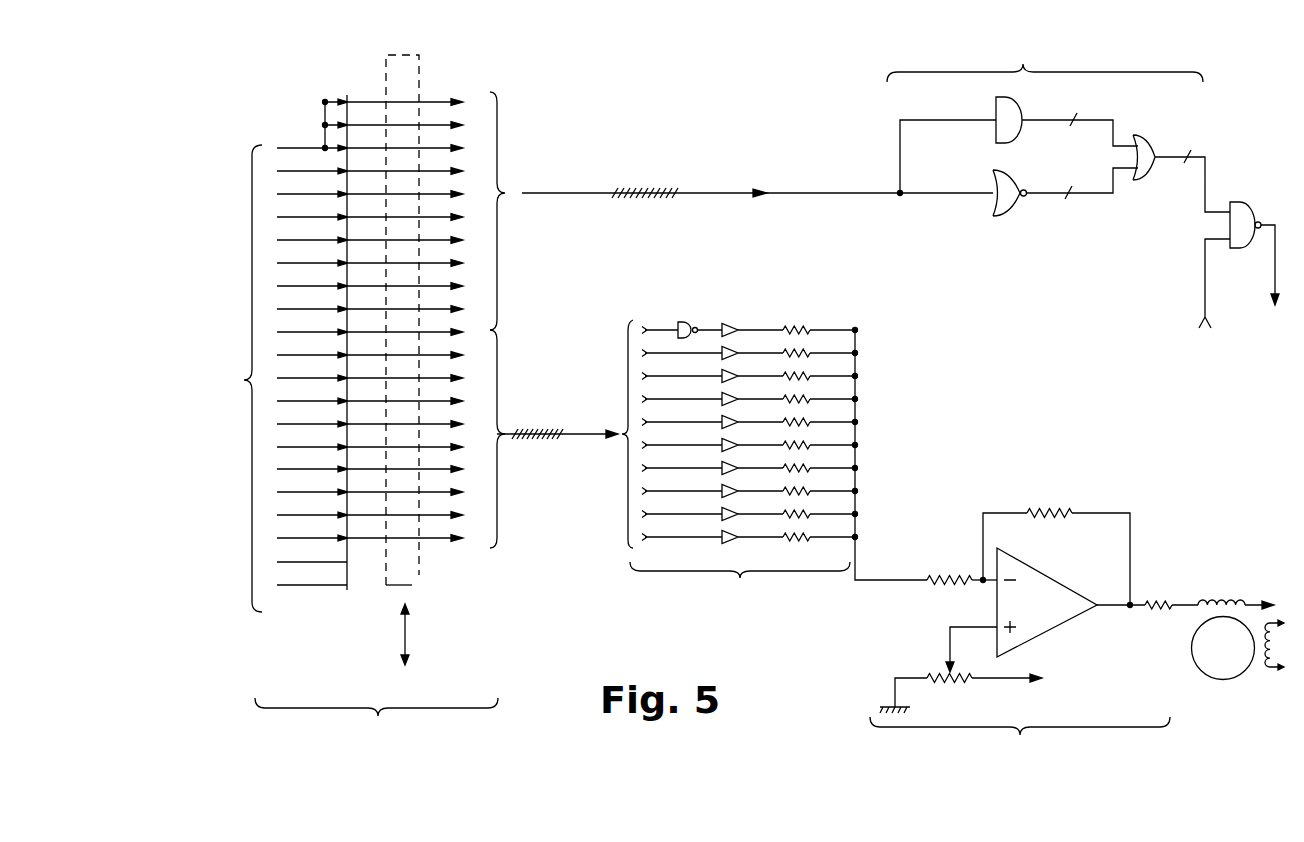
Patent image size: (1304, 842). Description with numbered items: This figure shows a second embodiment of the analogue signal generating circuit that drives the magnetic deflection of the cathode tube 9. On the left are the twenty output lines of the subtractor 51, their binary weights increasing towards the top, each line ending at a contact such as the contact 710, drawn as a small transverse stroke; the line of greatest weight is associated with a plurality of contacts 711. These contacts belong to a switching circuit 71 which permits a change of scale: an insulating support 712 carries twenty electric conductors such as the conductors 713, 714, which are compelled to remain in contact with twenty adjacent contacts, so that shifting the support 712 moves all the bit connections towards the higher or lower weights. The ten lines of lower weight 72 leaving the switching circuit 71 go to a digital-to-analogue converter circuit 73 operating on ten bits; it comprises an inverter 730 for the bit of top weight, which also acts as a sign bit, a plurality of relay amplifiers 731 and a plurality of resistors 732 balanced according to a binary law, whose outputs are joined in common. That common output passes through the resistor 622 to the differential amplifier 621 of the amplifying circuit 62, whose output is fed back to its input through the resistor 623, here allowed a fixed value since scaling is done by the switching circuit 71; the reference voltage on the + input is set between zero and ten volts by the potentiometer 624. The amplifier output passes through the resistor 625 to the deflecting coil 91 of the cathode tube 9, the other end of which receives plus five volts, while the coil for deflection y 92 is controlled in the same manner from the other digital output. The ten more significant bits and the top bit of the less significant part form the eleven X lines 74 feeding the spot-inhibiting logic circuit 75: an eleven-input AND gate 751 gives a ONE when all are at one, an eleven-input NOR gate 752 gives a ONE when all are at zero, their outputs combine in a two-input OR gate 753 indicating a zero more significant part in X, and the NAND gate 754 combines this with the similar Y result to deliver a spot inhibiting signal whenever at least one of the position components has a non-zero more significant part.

The subtractor 51 is at (242, 383).
The switching circuit 71 is at (374, 415).
The contact 710 is at (340, 593).
The plurality of contacts 711 is at (345, 100).
The insulating support 712 is at (420, 575).
The electric conductor 713 is at (352, 542).
The electric conductor 714 is at (367, 88).
The lines of lower weight 72 is at (557, 390).
The digital-to-analogue converter circuit 73 is at (774, 445).
The inverter 730 is at (687, 320).
The relay amplifiers 731 is at (732, 322).
The resistors 732 is at (805, 322).
The lines 74 is at (712, 193).
The spot-inhibiting logic circuit 75 is at (1086, 183).
The AND gate 751 is at (1019, 138).
The NOR gate 752 is at (1019, 182).
The OR gate 753 is at (1181, 157).
The NAND gate 754 is at (1218, 248).
The amplifying circuit 62 is at (1034, 619).
The differential amplifier 621 is at (1045, 572).
The resistor 622 is at (928, 560).
The resistor 623 is at (1036, 507).
The potentiometer 624 is at (948, 684).
The resistor 625 is at (1148, 584).
The cathode tube 9 is at (1188, 670).
The deflecting coil 91 is at (1222, 600).
The coil for deflection y 92 is at (1279, 703).